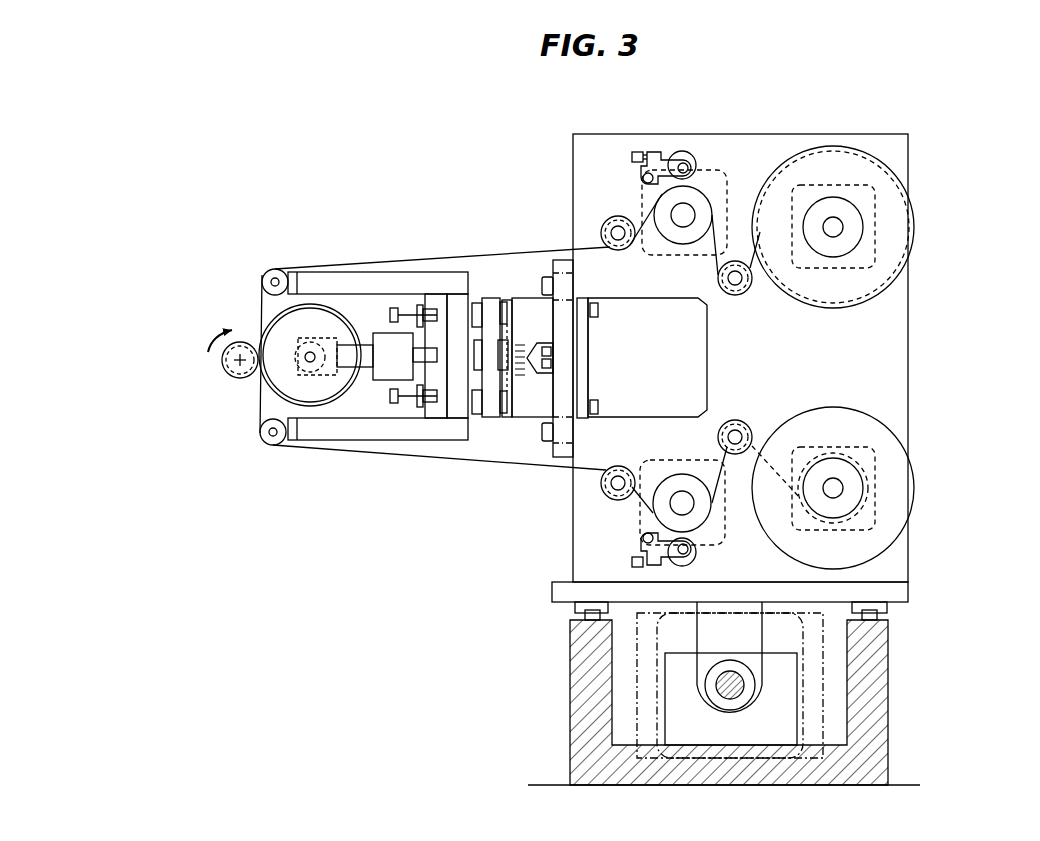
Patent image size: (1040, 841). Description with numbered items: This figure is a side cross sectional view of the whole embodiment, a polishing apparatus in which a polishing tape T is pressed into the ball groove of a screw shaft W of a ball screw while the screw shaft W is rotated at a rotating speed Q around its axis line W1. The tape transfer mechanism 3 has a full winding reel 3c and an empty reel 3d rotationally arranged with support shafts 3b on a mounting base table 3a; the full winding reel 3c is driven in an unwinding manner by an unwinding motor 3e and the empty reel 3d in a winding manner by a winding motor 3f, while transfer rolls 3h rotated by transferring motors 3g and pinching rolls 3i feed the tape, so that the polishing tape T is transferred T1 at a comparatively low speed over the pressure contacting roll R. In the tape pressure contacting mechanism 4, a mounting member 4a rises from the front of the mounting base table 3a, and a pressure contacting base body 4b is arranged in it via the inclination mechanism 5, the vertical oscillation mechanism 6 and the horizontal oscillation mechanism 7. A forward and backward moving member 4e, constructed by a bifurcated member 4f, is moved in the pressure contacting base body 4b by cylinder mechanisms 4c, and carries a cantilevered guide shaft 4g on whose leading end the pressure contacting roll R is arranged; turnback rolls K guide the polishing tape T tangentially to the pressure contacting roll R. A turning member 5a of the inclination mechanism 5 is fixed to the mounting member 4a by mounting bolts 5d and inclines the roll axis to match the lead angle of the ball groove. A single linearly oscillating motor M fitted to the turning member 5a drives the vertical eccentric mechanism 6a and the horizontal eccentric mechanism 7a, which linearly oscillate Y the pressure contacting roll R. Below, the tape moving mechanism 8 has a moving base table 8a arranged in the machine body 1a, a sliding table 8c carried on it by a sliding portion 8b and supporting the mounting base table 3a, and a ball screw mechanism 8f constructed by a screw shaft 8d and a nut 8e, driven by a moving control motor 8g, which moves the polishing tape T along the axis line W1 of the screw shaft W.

The machine body 1a is at (548, 785).
The tape transfer mechanism 3 is at (448, 465).
The mounting base table 3a is at (900, 357).
The support shafts 3b is at (838, 222).
The full winding reel 3c is at (888, 250).
The empty reel 3d is at (888, 515).
The unwinding motor 3e is at (878, 232).
The winding motor 3f is at (878, 492).
The transferring motors 3g is at (727, 197).
The transfer rolls 3h is at (698, 200).
The pinching rolls 3i is at (680, 155).
The tape pressure contacting mechanism 4 is at (372, 312).
The mounting member 4a is at (563, 430).
The pressure contacting base body 4b is at (415, 440).
The cylinder mechanisms 4c is at (447, 440).
The forward and backward moving member 4e is at (390, 375).
The bifurcated member 4f is at (315, 430).
The guide shaft 4g is at (307, 360).
The inclination mechanism 5 is at (500, 430).
The turning member 5a is at (527, 410).
The mounting bolts 5d is at (547, 283).
The vertical oscillation mechanism 6 is at (508, 272).
The vertical eccentric mechanism 6a is at (518, 290).
The horizontal oscillation mechanism 7 is at (476, 290).
The horizontal eccentric mechanism 7a is at (485, 268).
The tape moving mechanism 8 is at (905, 717).
The moving base table 8a is at (870, 765).
The sliding portion 8b is at (575, 610).
The sliding table 8c is at (898, 590).
The screw shaft 8d is at (730, 695).
The nut 8e is at (740, 717).
The ball screw mechanism 8f is at (707, 723).
The moving control motor 8g is at (805, 688).
The linearly oscillating motor M is at (675, 347).
The turnback rolls K is at (273, 272).
The pressure contacting roll R is at (280, 333).
The rotating speed Q is at (204, 331).
The polishing tape T is at (438, 258).
The transfer T1 is at (410, 254).
The screw shaft W is at (222, 362).
The axis line W1 is at (237, 362).
The linear oscillation Y is at (333, 355).